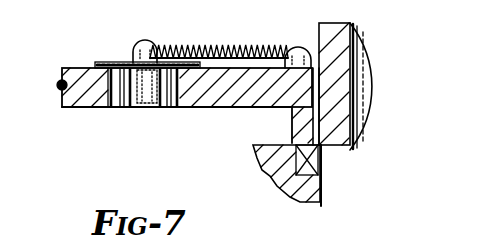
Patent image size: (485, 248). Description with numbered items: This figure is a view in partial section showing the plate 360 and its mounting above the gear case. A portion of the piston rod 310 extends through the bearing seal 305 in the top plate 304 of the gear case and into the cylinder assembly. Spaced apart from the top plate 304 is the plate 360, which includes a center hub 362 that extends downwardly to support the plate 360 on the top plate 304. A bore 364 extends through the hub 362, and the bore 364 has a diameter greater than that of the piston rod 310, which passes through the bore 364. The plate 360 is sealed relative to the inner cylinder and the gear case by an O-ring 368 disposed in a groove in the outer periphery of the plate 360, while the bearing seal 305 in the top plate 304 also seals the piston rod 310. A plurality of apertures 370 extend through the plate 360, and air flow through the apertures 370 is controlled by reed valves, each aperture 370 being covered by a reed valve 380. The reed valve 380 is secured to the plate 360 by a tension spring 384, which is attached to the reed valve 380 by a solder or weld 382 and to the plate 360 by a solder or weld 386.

The top plate 304 is at (257, 147).
The bearing seal 305 is at (324, 165).
The piston rod 310 is at (345, 80).
The plate 360 is at (79, 80).
The center hub 362 is at (307, 115).
The bore 364 is at (322, 130).
The O-ring 368 is at (60, 87).
The apertures 370 is at (107, 90).
The reed valve 380 is at (107, 66).
The solder or weld 382 is at (146, 44).
The tension spring 384 is at (207, 44).
The solder or weld 386 is at (304, 48).